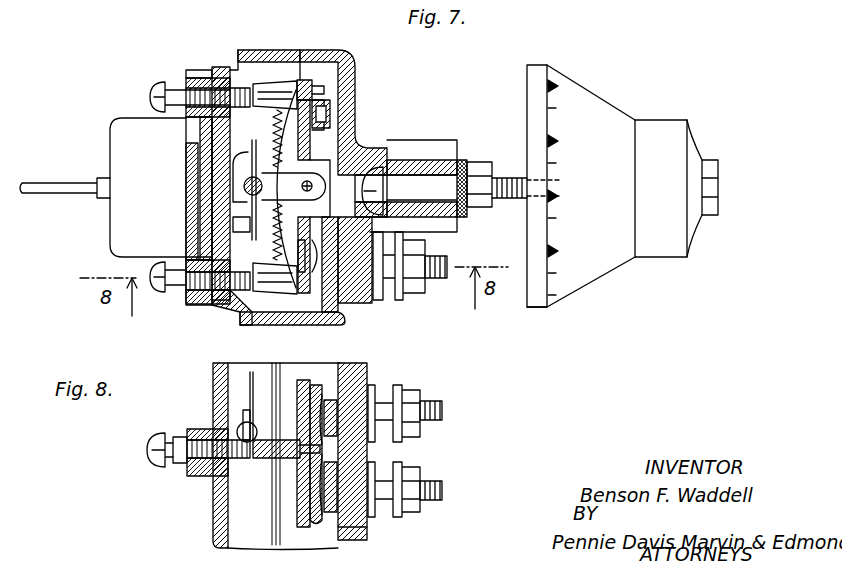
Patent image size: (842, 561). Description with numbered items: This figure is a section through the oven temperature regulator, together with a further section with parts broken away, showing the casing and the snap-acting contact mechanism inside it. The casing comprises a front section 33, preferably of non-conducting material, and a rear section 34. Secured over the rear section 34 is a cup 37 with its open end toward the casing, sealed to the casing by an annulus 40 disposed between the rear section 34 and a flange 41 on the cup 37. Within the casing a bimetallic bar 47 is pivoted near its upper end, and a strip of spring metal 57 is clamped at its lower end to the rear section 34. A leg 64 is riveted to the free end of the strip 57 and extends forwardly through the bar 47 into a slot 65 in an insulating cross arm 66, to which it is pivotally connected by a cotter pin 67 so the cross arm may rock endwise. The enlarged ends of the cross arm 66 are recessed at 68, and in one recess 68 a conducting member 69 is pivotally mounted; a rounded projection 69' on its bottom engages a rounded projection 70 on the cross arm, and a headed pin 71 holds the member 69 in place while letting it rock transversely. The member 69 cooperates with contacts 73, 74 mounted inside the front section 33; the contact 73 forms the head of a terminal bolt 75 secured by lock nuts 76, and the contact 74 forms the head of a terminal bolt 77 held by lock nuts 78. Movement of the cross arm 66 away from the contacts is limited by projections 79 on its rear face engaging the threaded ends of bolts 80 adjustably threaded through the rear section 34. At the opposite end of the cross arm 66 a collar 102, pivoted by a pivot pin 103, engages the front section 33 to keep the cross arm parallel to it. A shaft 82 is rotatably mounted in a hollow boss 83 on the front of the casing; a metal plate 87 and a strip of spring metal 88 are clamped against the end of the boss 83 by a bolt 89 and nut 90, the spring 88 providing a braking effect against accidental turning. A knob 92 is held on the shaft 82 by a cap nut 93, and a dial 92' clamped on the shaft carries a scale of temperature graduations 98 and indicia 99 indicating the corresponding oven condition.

In FIG. 7, the front section 33 is at (356, 80).
In FIG. 7, the rear section 34 is at (221, 67).
In FIG. 8, the rear section 34 is at (213, 531).
In FIG. 7, the cup 37 is at (110, 138).
In FIG. 7, the annulus 40 is at (200, 305).
In FIG. 7, the flange 41 is at (192, 70).
In FIG. 7, the bimetallic bar 47 is at (303, 80).
In FIG. 8, the bimetallic bar 47 is at (281, 534).
In FIG. 7, the strip of spring metal 57 is at (251, 150).
In FIG. 8, the strip of spring metal 57 is at (250, 392).
In FIG. 7, the leg 64 is at (277, 142).
In FIG. 8, the leg 64 is at (243, 420).
In FIG. 7, the slot 65 is at (300, 152).
In FIG. 7, the cross arm 66 is at (305, 100).
In FIG. 8, the cross arm 66 is at (298, 490).
In FIG. 7, the cotter pin 67 is at (275, 240).
In FIG. 8, the recess 68 is at (322, 392).
In FIG. 7, the conducting member 69 is at (314, 272).
In FIG. 8, the conducting member 69 is at (279, 465).
In FIG. 8, the rounded projection 69' is at (294, 442).
In FIG. 8, the rounded projection 70 is at (213, 498).
In FIG. 7, the headed pin 71 is at (313, 275).
In FIG. 8, the headed pin 71 is at (275, 440).
In FIG. 8, the contact 73 is at (370, 373).
In FIG. 7, the contact 74 is at (372, 300).
In FIG. 8, the contact 74 is at (367, 533).
In FIG. 8, the terminal bolt 75 is at (442, 411).
In FIG. 8, the lock nuts 76 is at (406, 438).
In FIG. 7, the terminal bolt 77 is at (440, 266).
In FIG. 8, the terminal bolt 77 is at (442, 491).
In FIG. 7, the lock nuts 78 is at (410, 293).
In FIG. 8, the lock nuts 78 is at (406, 512).
In FIG. 7, the projections 79 is at (275, 82).
In FIG. 8, the projections 79 is at (213, 479).
In FIG. 7, the bolts 80 is at (158, 82).
In FIG. 8, the bolts 80 is at (147, 453).
In FIG. 7, the shaft 82 is at (526, 238).
In FIG. 7, the hollow boss 83 is at (435, 148).
In FIG. 7, the metal plate 87 is at (462, 160).
In FIG. 7, the strip of spring metal 88 is at (470, 210).
In FIG. 7, the bolt 89 is at (500, 178).
In FIG. 7, the nut 90 is at (480, 162).
In FIG. 7, the knob 92 is at (668, 170).
In FIG. 7, the dial 92' is at (554, 320).
In FIG. 7, the cap nut 93 is at (718, 172).
In FIG. 7, the scale of temperature graduations 98 is at (575, 95).
In FIG. 7, the indicia 99 is at (606, 122).
In FIG. 7, the collar 102 is at (331, 112).
In FIG. 7, the pivot pin 103 is at (350, 54).